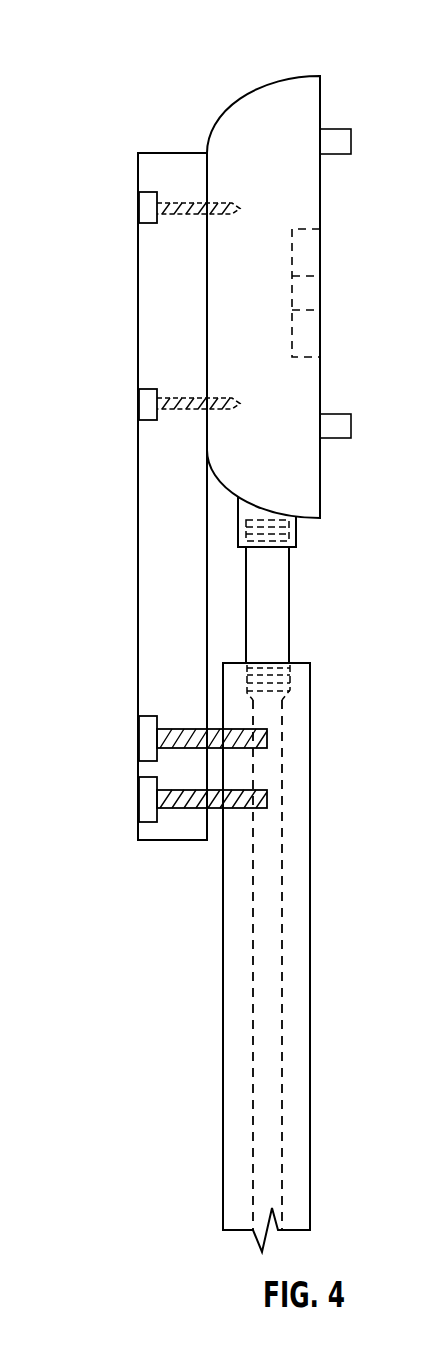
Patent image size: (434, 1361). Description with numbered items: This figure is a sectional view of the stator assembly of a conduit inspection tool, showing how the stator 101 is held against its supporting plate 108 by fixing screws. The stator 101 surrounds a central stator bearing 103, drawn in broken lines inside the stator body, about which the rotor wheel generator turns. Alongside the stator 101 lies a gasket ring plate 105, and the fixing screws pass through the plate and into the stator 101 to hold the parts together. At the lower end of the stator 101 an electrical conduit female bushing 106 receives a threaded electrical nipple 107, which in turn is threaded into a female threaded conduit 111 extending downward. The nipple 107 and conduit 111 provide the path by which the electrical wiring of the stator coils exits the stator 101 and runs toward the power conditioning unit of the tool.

The stator 101 is at (266, 85).
The stator bearing 103 is at (307, 248).
The gasket ring plate 105 is at (129, 271).
The electrical conduit female bushing 106 is at (305, 534).
The threaded electrical nipple 107 is at (295, 605).
The supporting plate 108 is at (135, 679).
The female threaded conduit 111 is at (315, 932).